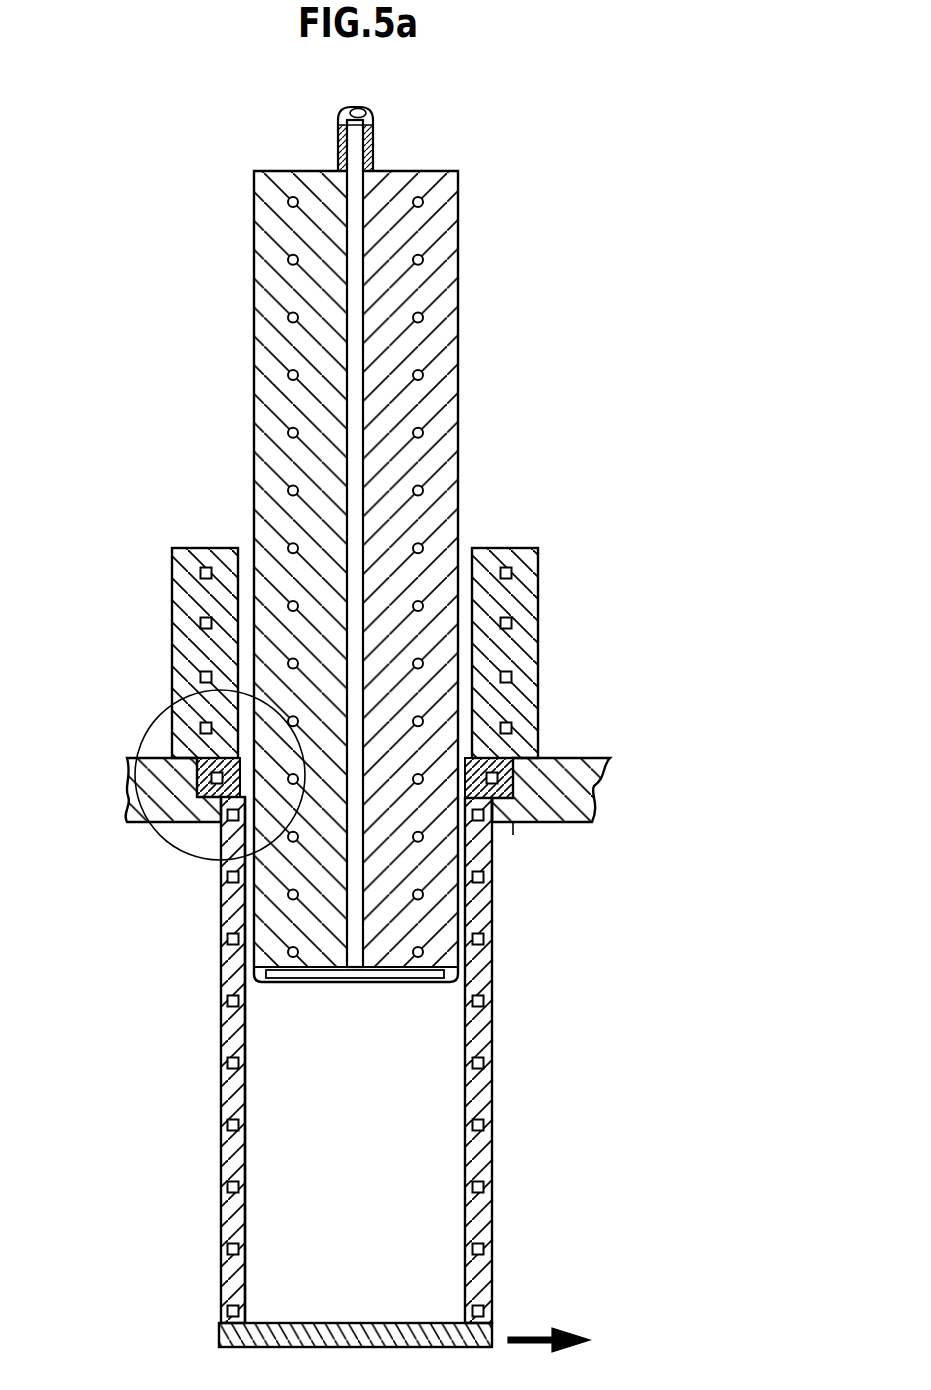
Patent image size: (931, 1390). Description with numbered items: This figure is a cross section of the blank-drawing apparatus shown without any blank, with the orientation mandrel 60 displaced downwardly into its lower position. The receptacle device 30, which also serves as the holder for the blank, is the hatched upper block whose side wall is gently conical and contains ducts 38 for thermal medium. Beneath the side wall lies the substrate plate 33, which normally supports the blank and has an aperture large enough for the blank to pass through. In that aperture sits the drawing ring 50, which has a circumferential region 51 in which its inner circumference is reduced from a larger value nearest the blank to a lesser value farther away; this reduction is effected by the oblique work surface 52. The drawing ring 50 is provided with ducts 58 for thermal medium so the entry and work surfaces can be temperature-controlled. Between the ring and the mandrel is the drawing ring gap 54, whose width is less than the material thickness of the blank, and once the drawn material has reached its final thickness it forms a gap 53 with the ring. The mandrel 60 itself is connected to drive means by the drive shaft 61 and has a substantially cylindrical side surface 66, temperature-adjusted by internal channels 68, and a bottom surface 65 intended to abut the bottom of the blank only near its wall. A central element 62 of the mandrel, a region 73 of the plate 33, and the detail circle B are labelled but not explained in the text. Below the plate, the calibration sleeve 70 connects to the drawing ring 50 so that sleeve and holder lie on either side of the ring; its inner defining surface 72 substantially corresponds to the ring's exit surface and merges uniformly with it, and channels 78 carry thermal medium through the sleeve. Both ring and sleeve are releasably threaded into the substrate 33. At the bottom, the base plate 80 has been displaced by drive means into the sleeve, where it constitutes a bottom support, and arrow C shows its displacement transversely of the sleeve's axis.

The receptacle device 30 is at (540, 578).
The substrate plate 33 is at (122, 787).
The ducts for thermal medium 38 is at (200, 575).
The drawing ring 50 is at (190, 822).
The circumferential region 51 is at (463, 793).
The work surface 52 is at (466, 772).
The gap 53 is at (523, 773).
The drawing ring gap 54 is at (255, 785).
The ducts for thermal medium 58 is at (170, 758).
The orientation mandrel 60 is at (440, 448).
The drive shaft 61 is at (373, 150).
The rod 62 is at (353, 362).
The bottom surface of the mandrel 65 is at (412, 983).
The side surface 66 is at (460, 898).
The channels 68 is at (423, 206).
The calibration sleeve 70 is at (220, 1087).
The inner defining surface of the calibration sleeve 72 is at (245, 1088).
The plate edge 73 is at (513, 835).
The channels for thermal medium 78 is at (228, 946).
The base plate 80 is at (219, 1337).
The detail circle B is at (150, 833).
The arrow C is at (549, 1329).